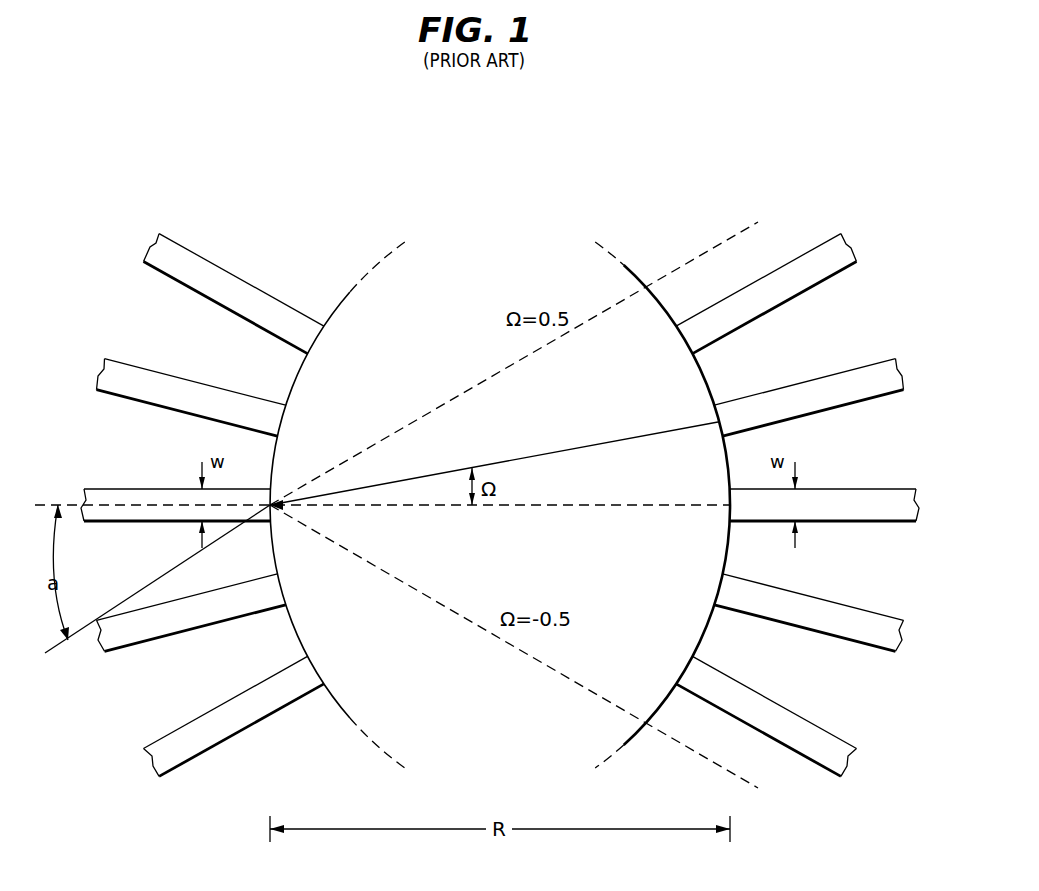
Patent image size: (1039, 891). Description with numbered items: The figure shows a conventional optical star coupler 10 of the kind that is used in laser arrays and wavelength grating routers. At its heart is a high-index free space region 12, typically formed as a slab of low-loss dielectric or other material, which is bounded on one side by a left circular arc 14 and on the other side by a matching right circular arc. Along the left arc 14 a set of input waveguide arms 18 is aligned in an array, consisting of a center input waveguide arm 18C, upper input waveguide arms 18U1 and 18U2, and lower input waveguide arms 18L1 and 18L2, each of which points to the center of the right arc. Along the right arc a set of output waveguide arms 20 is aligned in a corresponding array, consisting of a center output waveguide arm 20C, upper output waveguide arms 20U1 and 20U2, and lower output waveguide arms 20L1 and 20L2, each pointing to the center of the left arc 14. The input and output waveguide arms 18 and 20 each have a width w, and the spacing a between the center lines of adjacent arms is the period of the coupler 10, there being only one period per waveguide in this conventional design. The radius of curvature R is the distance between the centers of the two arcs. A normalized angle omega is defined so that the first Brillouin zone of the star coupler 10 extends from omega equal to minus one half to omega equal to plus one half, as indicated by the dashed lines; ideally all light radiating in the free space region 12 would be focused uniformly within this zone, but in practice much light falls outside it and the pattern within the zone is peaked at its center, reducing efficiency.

The optical star coupler 10 is at (294, 142).
The high-index free space region 12 is at (410, 318).
The left circular arc 14 is at (347, 292).
The input waveguide arms 18 is at (202, 507).
The second upper input waveguide arm 18U2 is at (200, 256).
The first upper input waveguide arm 18U1 is at (153, 371).
The center input waveguide arm 18C is at (105, 489).
The first lower input waveguide arm 18L1 is at (148, 640).
The second lower input waveguide arm 18L2 is at (248, 727).
The output waveguide arms 20 is at (797, 513).
The second upper output waveguide arm 20U2 is at (808, 252).
The first upper output waveguide arm 20U1 is at (852, 370).
The center output waveguide arm 20C is at (850, 489).
The first lower output waveguide arm 20L1 is at (832, 635).
The second lower output waveguide arm 20L2 is at (800, 753).